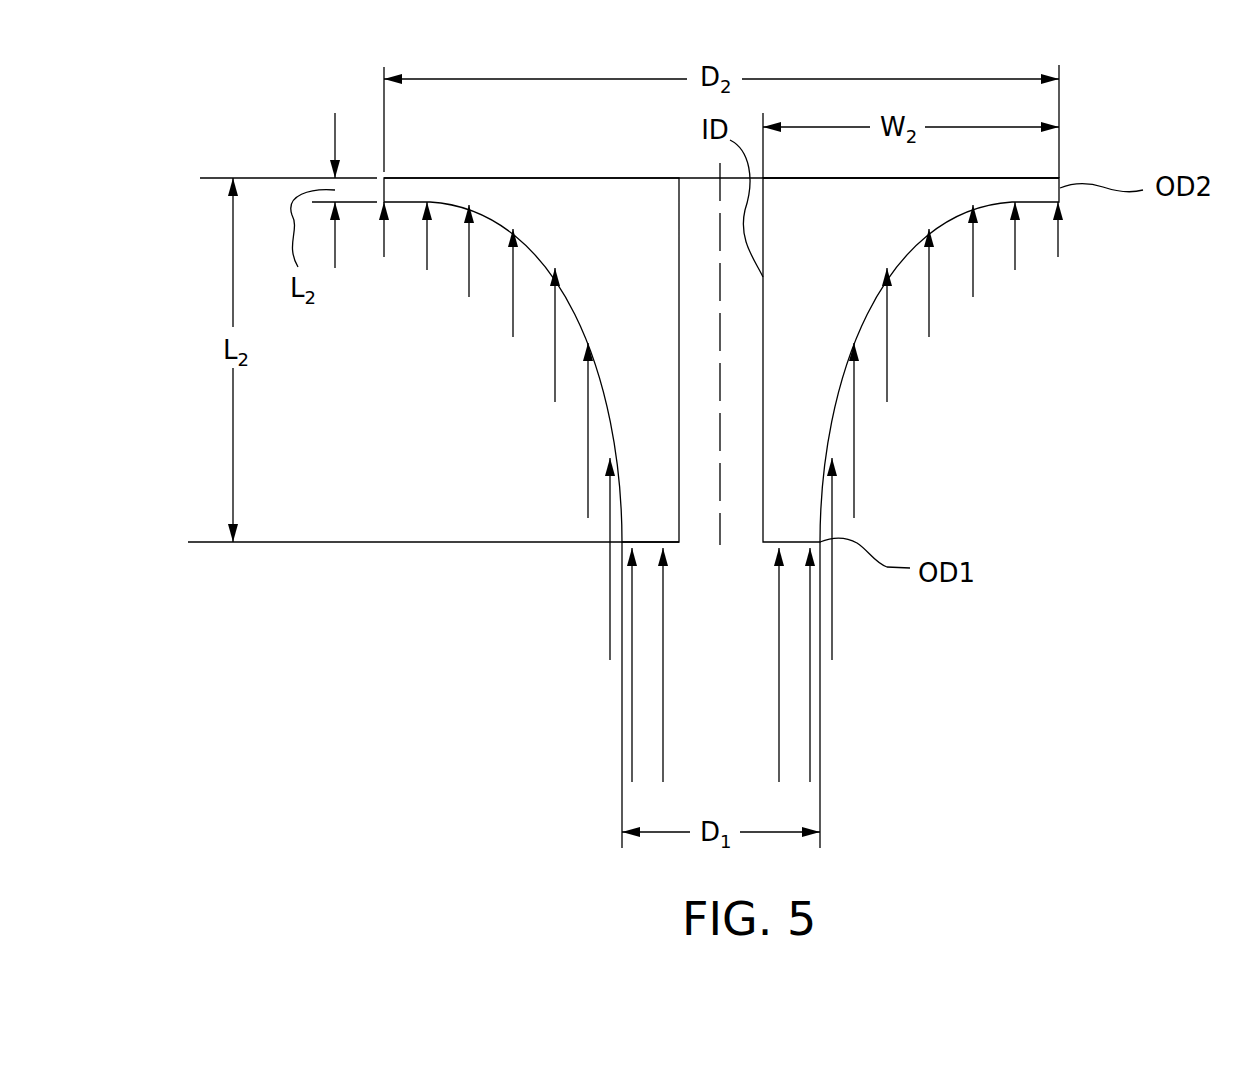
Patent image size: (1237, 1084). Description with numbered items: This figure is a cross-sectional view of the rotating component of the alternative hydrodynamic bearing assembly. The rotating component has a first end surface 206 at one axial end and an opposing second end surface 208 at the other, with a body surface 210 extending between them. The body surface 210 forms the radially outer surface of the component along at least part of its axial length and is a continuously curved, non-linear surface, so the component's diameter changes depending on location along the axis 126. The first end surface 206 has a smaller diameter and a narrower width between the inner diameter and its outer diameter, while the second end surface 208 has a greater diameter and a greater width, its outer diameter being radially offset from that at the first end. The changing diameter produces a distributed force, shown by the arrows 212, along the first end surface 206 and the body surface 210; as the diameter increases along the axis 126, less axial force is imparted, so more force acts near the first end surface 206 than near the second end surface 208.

The axis 126 is at (720, 303).
The first end surface 206 is at (680, 542).
The second end surface 208 is at (927, 178).
The body surface 210 is at (582, 317).
The arrows 212 is at (973, 380).